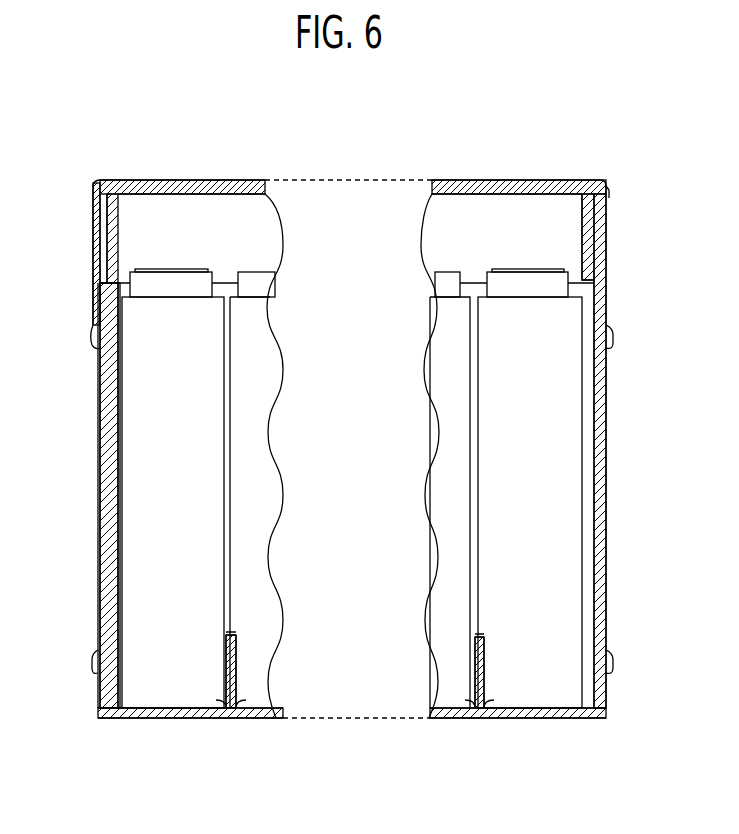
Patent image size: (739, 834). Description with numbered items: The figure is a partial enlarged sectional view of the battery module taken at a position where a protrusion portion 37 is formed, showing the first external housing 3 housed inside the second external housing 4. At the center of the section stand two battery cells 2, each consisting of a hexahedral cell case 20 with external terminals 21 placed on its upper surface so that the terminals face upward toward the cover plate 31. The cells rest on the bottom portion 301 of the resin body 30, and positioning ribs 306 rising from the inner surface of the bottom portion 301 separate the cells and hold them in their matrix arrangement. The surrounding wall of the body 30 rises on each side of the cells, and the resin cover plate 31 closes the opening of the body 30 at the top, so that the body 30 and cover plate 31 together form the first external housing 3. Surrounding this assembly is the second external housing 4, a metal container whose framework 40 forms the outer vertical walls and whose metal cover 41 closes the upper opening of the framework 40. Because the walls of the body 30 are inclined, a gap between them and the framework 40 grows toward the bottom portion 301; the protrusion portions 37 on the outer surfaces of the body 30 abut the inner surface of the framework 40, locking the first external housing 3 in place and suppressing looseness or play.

The battery cell 2 is at (347, 503).
The cell case 20 is at (347, 503).
The external terminal 21 is at (173, 282).
The first external housing 3 is at (637, 243).
The body 30 is at (604, 310).
The cover plate 31 is at (676, 300).
The bottom portion 301 is at (260, 720).
The positioning rib 306 is at (237, 657).
The protrusion portion 37 is at (110, 693).
The second external housing 4 is at (313, 264).
The framework 40 is at (101, 320).
The cover 41 is at (97, 243).